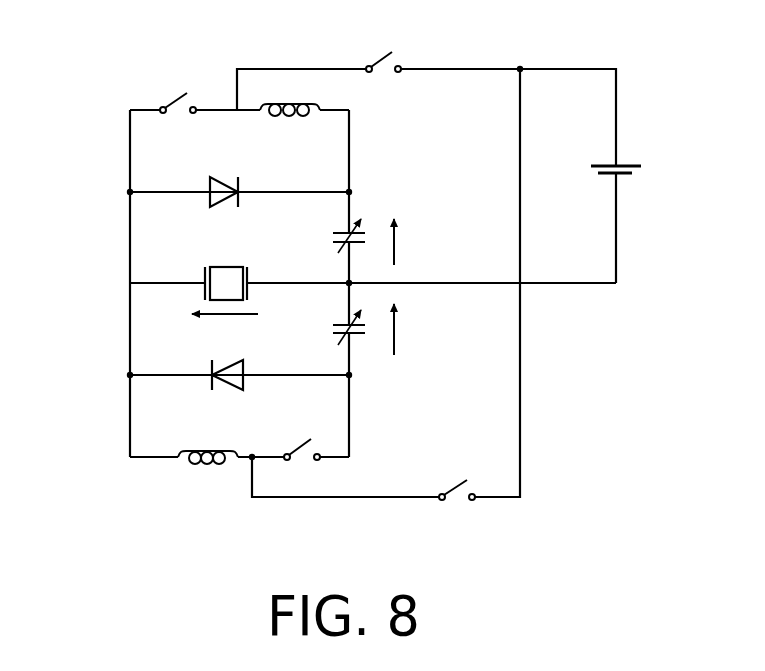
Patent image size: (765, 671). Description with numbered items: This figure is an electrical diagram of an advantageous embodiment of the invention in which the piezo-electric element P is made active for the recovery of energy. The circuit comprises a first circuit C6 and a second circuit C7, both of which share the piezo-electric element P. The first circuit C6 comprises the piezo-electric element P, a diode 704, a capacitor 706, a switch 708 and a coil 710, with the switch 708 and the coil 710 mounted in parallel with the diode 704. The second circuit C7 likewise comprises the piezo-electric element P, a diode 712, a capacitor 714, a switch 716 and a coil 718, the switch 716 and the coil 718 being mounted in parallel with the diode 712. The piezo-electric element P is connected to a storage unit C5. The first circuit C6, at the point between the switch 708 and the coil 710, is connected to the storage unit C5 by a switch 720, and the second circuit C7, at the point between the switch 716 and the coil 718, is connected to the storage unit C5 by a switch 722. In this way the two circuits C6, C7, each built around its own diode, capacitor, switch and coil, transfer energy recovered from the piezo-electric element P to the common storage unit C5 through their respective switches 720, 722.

The diode 704 is at (228, 180).
The capacitor 706 is at (373, 232).
The switch 708 is at (178, 97).
The coil 710 is at (282, 100).
The diode 712 is at (222, 387).
The capacitor 714 is at (372, 335).
The switch 716 is at (305, 460).
The coil 718 is at (203, 464).
The switch 720 is at (392, 58).
The switch 722 is at (456, 500).
The piezo-electric element P is at (228, 278).
The storage unit C5 is at (635, 176).
The first circuit C6 is at (117, 191).
The second circuit C7 is at (117, 374).